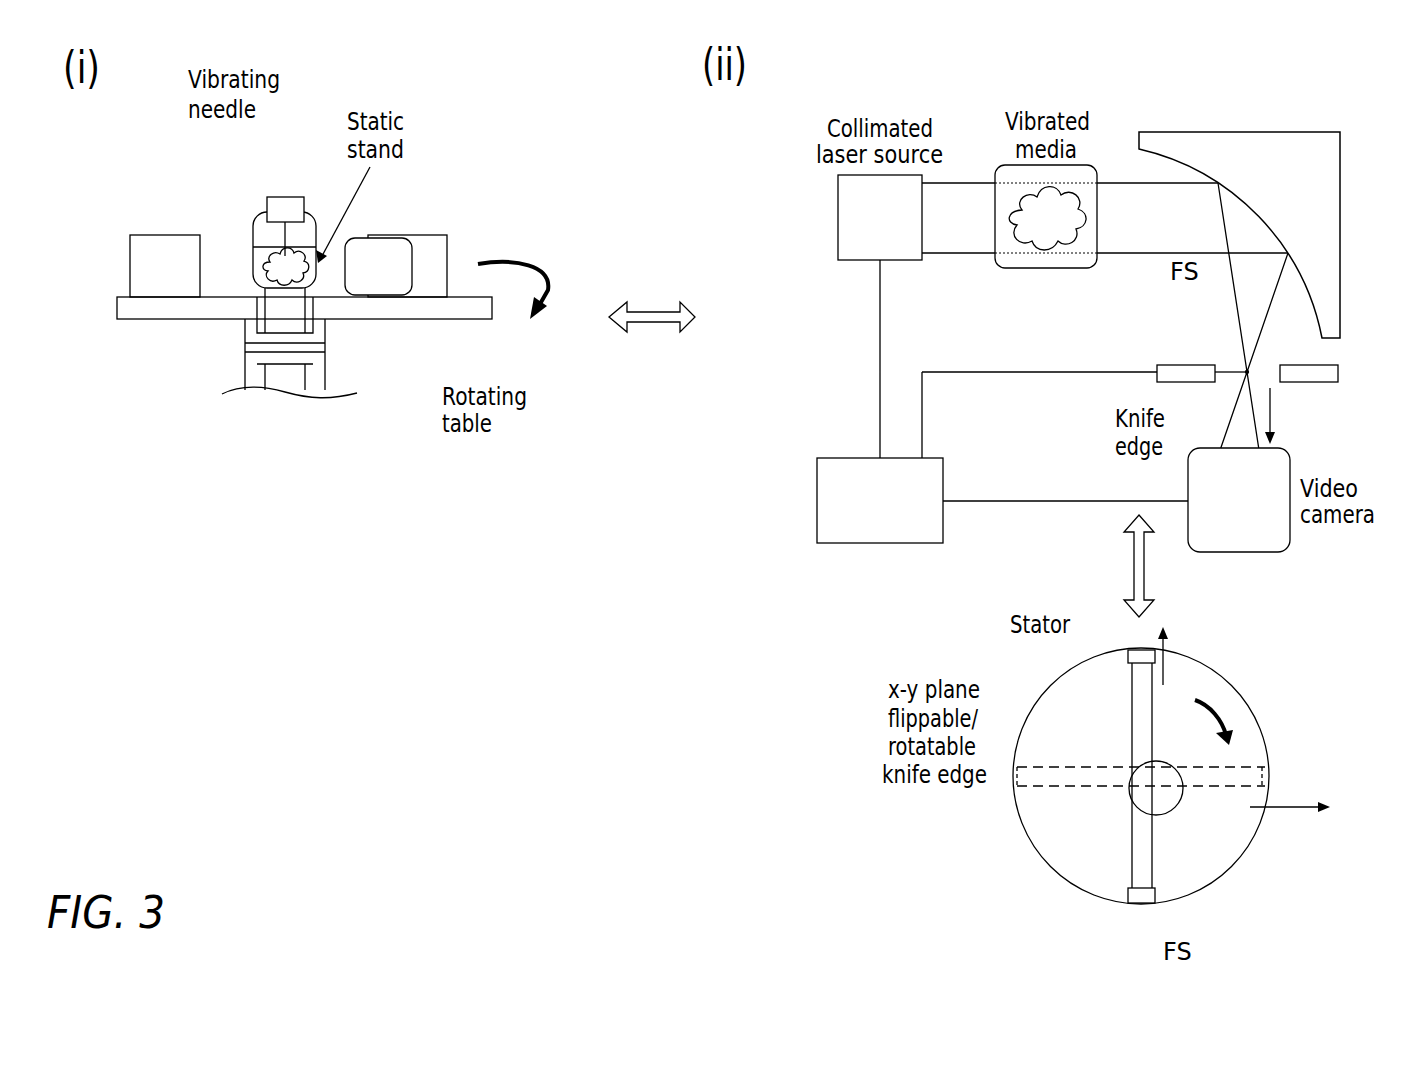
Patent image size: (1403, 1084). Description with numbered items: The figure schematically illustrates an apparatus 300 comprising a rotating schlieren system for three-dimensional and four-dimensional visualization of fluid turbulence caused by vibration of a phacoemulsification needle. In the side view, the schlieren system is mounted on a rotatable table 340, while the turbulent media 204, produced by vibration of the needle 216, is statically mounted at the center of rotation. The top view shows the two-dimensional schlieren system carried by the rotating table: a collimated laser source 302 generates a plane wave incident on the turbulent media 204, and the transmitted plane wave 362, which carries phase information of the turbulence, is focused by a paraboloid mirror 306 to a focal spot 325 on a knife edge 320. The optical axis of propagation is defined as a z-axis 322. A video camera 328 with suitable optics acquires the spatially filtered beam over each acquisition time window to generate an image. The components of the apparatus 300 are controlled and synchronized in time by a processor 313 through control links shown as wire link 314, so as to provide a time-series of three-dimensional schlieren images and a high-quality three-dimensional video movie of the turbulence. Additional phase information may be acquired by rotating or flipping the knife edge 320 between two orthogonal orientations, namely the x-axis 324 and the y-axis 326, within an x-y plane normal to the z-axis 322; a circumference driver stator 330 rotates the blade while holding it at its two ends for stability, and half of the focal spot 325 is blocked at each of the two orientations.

The apparatus 300 is at (492, 109).
The turbulent media 204 is at (266, 266).
The needle 216 is at (280, 232).
The rotatable table 340 is at (453, 319).
The collimated laser source 302 is at (900, 231).
The transmitted plane wave 362 is at (1183, 232).
The paraboloid mirror 306 is at (1306, 181).
The wire link 314 is at (880, 318).
The processor 313 is at (880, 543).
The circumference driver stator 330 is at (1168, 365).
The knife edge 320 is at (1224, 376).
The focal spot 325 is at (1245, 370).
The z-axis 322 is at (1270, 408).
The video camera 328 is at (1258, 517).
The y-axis 326 is at (1167, 674).
The x-axis 324 is at (1305, 812).